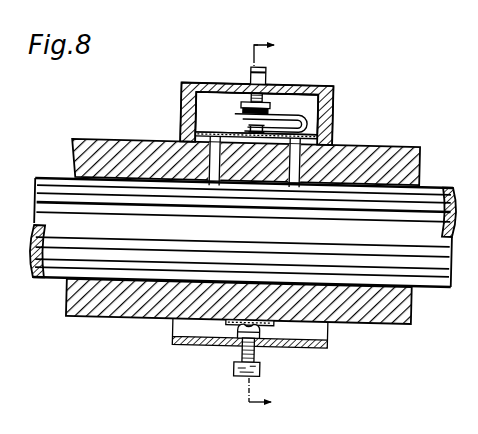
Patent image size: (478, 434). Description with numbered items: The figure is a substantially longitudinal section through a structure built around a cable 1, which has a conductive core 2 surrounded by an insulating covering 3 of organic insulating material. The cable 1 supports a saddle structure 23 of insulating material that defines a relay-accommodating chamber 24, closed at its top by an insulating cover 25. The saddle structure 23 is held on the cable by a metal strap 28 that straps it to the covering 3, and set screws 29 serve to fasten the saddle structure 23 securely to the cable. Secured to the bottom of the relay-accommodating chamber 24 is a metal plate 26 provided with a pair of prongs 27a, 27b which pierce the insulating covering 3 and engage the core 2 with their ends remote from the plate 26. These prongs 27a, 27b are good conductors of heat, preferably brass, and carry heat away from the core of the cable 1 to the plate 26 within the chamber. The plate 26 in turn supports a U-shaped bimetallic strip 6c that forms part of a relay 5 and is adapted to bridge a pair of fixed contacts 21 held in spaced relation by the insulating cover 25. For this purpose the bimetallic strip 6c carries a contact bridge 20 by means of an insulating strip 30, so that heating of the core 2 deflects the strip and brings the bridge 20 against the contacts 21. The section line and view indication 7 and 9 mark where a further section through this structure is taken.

The cable 1 is at (410, 125).
The core 2 is at (454, 198).
The insulating covering 3 is at (112, 146).
The relay 5 is at (210, 110).
The U-shaped bimetallic strip 6c is at (328, 129).
The section reference 7 is at (269, 24).
The section line 9 is at (261, 230).
The contact bridge 20 is at (238, 116).
The fixed contacts 21 is at (268, 105).
The saddle structure 23 is at (330, 98).
The relay-accommodating chamber 24 is at (278, 92).
The insulating cover 25 is at (194, 84).
The metal plate 26 is at (178, 112).
The prong 27a is at (211, 190).
The prong 27b is at (295, 190).
The metal strap 28 is at (175, 338).
The set screws 29 is at (255, 256).
The insulating strip 30 is at (325, 115).